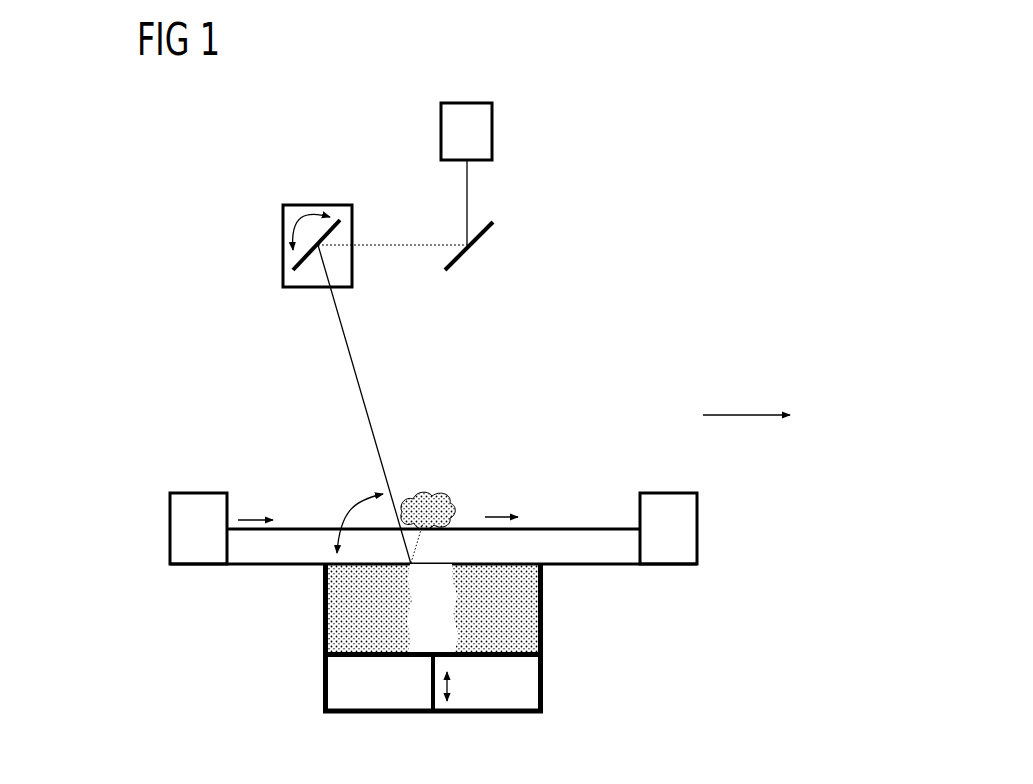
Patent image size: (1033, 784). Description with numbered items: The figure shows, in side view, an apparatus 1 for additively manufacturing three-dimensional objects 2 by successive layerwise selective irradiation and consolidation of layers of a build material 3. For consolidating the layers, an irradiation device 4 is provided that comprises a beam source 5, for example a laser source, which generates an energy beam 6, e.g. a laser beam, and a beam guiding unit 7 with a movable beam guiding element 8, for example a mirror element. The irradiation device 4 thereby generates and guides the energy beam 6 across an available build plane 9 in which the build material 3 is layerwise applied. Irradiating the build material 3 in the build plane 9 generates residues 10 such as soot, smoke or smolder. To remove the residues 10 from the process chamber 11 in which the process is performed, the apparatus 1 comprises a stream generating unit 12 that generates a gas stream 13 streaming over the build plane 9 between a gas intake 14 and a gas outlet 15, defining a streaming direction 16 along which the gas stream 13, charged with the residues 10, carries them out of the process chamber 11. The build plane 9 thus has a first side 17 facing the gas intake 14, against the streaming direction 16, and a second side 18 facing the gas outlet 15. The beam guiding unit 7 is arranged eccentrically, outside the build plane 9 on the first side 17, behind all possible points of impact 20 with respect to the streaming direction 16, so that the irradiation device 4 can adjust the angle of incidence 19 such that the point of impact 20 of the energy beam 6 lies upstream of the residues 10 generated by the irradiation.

The apparatus 1 is at (747, 124).
The three-dimensional object 2 is at (447, 605).
The build material 3 is at (340, 628).
The irradiation device 4 is at (349, 128).
The beam source 5 is at (492, 130).
The energy beam 6 is at (467, 188).
The beam guiding unit 7 is at (294, 188).
The movable beam guiding element 8 is at (292, 262).
The build plane 9 is at (506, 558).
The residues 10 is at (425, 495).
The process chamber 11 is at (667, 303).
The stream generating unit 12 is at (217, 449).
The gas stream 13 is at (583, 528).
The gas intake 14 is at (192, 565).
The gas outlet 15 is at (668, 565).
The streaming direction 16 is at (742, 413).
The first side 17 is at (323, 569).
The second side 18 is at (545, 567).
The angle of incidence 19 is at (350, 513).
The point of impact 20 is at (413, 562).